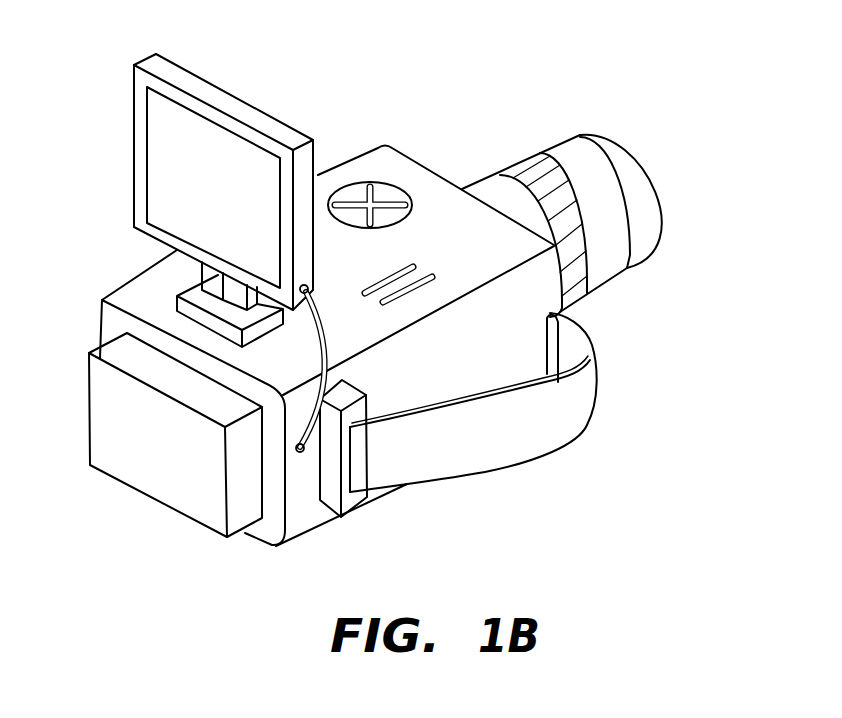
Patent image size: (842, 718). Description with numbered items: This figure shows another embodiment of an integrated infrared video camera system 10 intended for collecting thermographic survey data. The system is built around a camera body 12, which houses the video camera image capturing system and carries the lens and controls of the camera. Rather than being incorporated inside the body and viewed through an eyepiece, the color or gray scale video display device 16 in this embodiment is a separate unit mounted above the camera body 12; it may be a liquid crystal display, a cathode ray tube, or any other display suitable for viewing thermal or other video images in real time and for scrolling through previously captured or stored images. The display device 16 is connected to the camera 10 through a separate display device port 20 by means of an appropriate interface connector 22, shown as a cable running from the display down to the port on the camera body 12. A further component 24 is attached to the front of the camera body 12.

The video camera system 10 is at (370, 307).
The camera housing 12 is at (438, 190).
The display 16 is at (182, 163).
The hand strap 20 is at (299, 452).
The cable 22 is at (328, 348).
The battery pack 24 is at (152, 468).